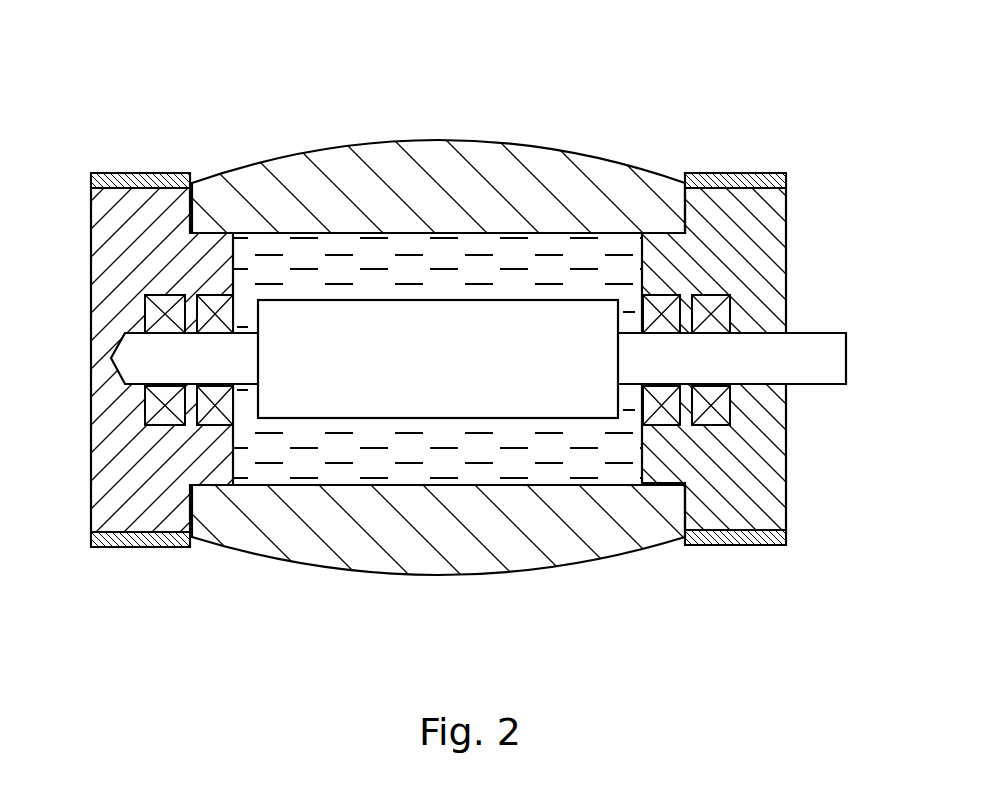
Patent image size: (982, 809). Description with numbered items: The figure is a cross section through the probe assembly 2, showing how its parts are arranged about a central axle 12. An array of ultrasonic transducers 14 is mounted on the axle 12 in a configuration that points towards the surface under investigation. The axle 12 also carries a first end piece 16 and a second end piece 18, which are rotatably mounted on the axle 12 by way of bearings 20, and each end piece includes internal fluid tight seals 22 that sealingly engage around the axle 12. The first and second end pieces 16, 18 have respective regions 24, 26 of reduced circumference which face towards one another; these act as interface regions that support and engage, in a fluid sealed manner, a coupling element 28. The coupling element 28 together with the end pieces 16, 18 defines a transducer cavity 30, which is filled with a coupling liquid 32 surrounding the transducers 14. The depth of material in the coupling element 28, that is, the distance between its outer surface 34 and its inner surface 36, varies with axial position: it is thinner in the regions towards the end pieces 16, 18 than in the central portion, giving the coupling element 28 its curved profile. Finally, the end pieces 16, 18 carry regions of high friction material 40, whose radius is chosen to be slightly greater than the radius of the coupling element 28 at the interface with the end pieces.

The probe assembly 2 is at (467, 329).
The axle 12 is at (847, 357).
The array of ultrasonic transducers 14 is at (413, 402).
The first end piece 16 is at (768, 492).
The second end piece 18 is at (91, 468).
The bearings 20 is at (148, 312).
The internal fluid tight seals 22 is at (207, 426).
The region of reduced circumference 24 is at (207, 232).
The region of reduced circumference 26 is at (654, 233).
The coupling element 28 is at (512, 557).
The transducer cavity 30 is at (470, 478).
The coupling liquid 32 is at (505, 250).
The outer surface 34 is at (362, 146).
The inner surface 36 is at (343, 232).
The high friction material 40 is at (91, 548).